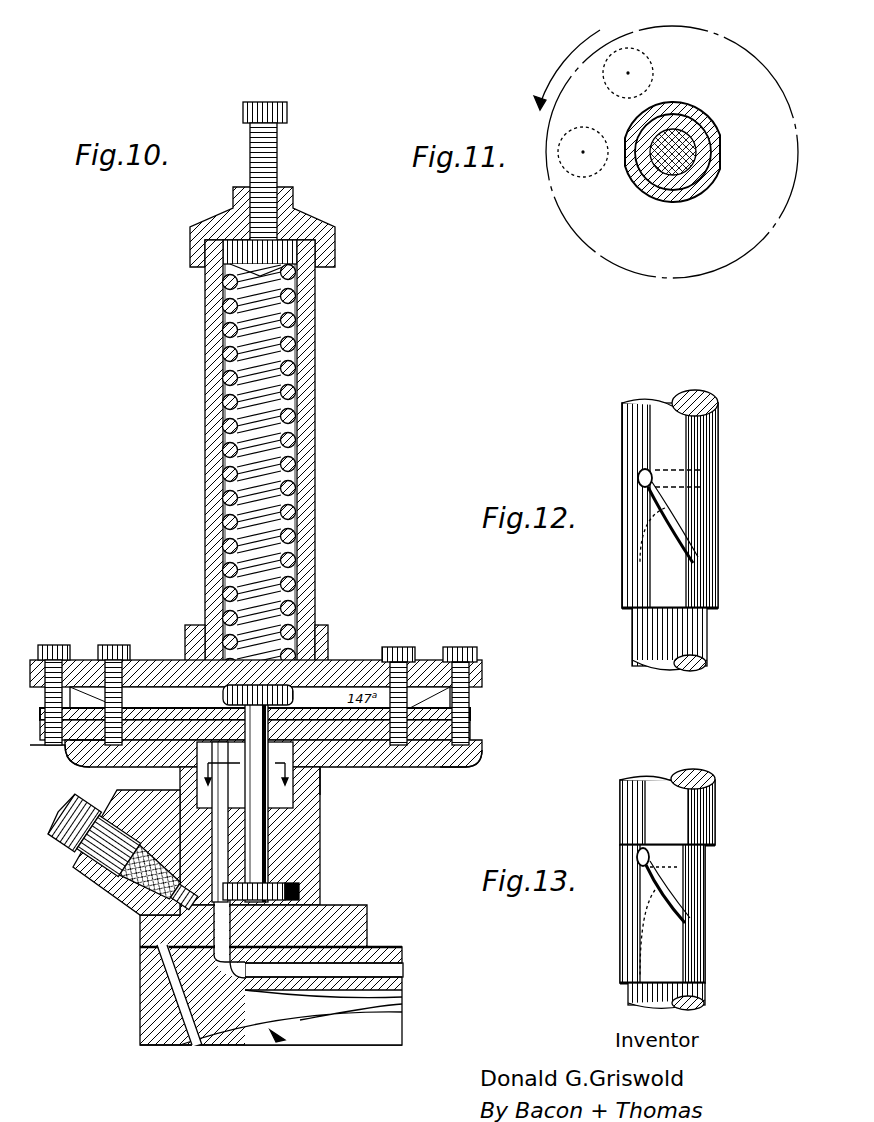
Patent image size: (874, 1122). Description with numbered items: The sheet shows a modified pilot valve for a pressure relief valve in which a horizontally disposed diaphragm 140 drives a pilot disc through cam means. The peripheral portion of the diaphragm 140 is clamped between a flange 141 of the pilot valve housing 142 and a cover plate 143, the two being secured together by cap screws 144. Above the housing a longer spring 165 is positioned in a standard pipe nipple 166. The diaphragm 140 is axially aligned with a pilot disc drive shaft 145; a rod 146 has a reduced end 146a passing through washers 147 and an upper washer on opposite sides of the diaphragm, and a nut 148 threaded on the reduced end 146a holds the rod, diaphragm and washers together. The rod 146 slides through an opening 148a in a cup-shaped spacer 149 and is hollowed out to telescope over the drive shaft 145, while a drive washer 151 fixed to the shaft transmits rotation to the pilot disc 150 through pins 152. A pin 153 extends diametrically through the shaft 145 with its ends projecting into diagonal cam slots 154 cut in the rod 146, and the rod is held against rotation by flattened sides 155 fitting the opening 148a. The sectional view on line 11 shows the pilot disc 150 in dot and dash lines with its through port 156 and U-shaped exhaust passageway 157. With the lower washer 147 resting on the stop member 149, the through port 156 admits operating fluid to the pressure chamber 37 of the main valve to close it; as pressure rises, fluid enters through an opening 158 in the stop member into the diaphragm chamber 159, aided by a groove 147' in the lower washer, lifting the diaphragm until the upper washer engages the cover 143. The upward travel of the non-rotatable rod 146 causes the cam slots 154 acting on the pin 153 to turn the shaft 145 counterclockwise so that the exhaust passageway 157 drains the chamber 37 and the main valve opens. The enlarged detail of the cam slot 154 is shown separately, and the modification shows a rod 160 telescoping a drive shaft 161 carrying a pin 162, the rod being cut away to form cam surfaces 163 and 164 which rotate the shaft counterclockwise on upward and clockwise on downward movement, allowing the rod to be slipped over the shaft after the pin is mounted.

In FIG. 10, the pressure chamber 37 is at (325, 1035).
In FIG. 10, the section line 11— 11 is at (248, 784).
In FIG. 10, the diaphragm 140 is at (483, 713).
In FIG. 10, the flange 141 is at (482, 745).
In FIG. 10, the pilot valve housing 142 is at (320, 836).
In FIG. 10, the cover plate 143 is at (475, 663).
In FIG. 10, the cap screws 144 is at (56, 645).
In FIG. 10, the pilot disc drive shaft 145 is at (265, 866).
In FIG. 12, the pilot disc drive shaft 145 is at (707, 641).
In FIG. 10, the rod 146 is at (320, 776).
In FIG. 10, the reduced end of rod 146a is at (330, 660).
In FIG. 10, the lower washer 147 is at (273, 771).
In FIG. 10, the groove 147' is at (91, 767).
In FIG. 10, the nut 148 is at (224, 695).
In FIG. 12, the nut 148 is at (718, 433).
In FIG. 10, the opening in spacer 148a is at (245, 775).
In FIG. 10, the cup-shaped spacer 149 is at (440, 770).
In FIG. 10, the pilot disc 150 is at (300, 912).
In FIG. 11, the pilot disc 150 is at (633, 278).
In FIG. 10, the drive washer 151 is at (285, 890).
In FIG. 10, the pins 152 is at (299, 898).
In FIG. 10, the pin 153 is at (250, 772).
In FIG. 11, the pin 153 is at (665, 206).
In FIG. 12, the pin 153 is at (641, 472).
In FIG. 12, the cam slots 154 is at (700, 521).
In FIG. 11, the flattened sides 155 is at (722, 151).
In FIG. 10, the through port 156 is at (215, 928).
In FIG. 11, the through port 156 is at (572, 172).
In FIG. 11, the U-shaped exhaust passageway 157 is at (667, 100).
In FIG. 10, the opening in stop member 158 is at (180, 767).
In FIG. 10, the diaphragm chamber 159 is at (65, 757).
In FIG. 13, the rod 160 is at (715, 816).
In FIG. 13, the pilot disc drive shaft 161 is at (705, 946).
In FIG. 13, the pin 162 is at (640, 866).
In FIG. 13, the cam surface 163 is at (680, 906).
In FIG. 13, the cam surface 164 is at (700, 878).
In FIG. 10, the spring 165 is at (308, 453).
In FIG. 10, the pipe nipple 166 is at (316, 496).